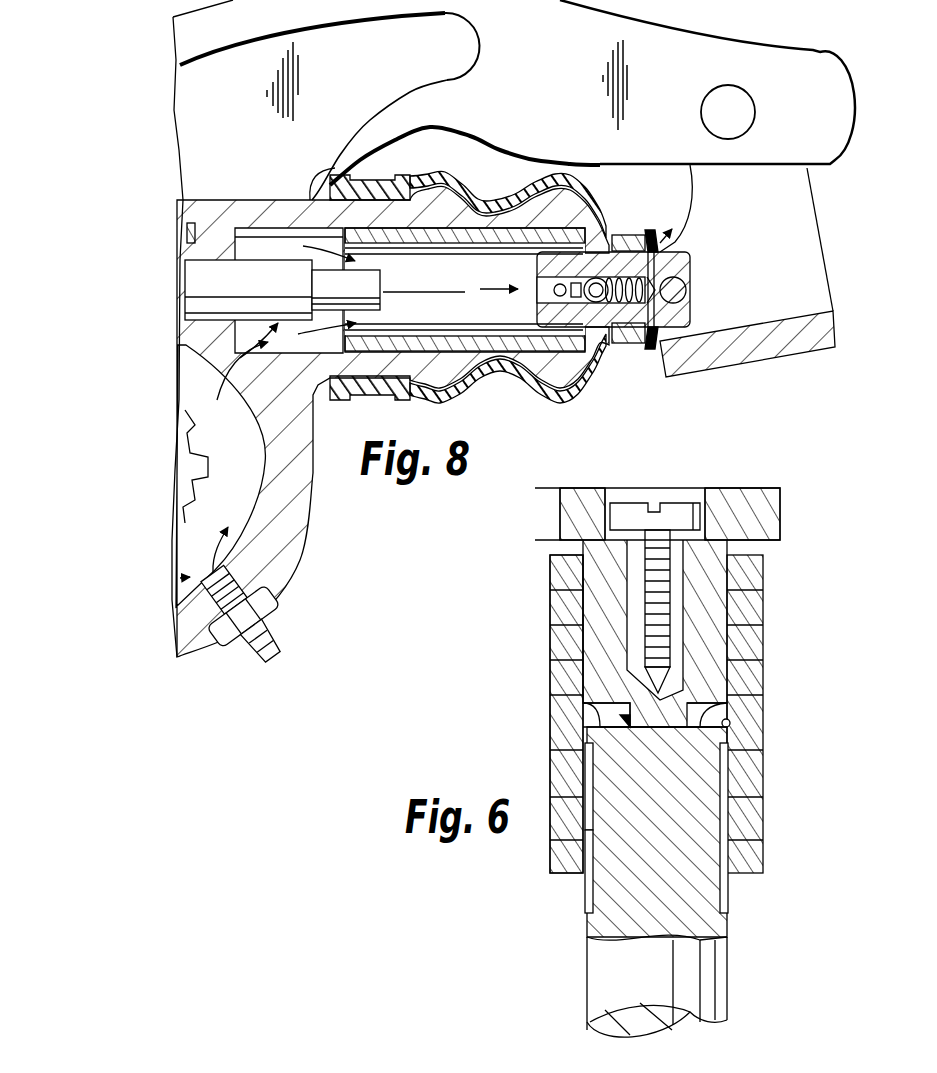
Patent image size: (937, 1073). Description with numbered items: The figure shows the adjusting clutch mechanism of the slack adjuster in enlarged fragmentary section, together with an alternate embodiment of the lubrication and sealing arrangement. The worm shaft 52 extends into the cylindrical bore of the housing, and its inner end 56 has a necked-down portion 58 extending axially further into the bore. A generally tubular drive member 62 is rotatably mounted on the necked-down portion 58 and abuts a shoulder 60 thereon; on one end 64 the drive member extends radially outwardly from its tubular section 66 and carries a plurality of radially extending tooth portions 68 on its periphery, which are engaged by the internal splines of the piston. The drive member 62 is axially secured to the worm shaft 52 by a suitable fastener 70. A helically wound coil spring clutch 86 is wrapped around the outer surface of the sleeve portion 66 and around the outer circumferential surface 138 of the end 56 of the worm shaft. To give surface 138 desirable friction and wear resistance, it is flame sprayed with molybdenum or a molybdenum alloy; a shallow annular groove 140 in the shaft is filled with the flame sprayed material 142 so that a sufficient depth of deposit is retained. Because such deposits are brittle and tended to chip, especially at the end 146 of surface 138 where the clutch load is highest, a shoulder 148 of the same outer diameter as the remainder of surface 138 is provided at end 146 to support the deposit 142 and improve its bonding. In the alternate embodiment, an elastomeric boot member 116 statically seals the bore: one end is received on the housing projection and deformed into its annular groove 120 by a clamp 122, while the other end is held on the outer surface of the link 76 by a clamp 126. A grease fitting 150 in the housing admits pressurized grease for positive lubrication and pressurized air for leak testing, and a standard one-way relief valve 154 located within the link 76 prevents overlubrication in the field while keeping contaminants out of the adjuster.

In FIG. 6, the worm shaft 52 is at (705, 931).
In FIG. 6, the inner end of the worm shaft 56 is at (700, 763).
In FIG. 6, the necked-down portion 58 is at (686, 634).
In FIG. 6, the shoulder 60 is at (723, 694).
In FIG. 6, the tubular drive member 62 is at (710, 633).
In FIG. 6, the end of the tubular drive member 64 is at (725, 526).
In FIG. 6, the tubular section 66 is at (710, 584).
In FIG. 6, the tooth portions 68 is at (781, 506).
In FIG. 6, the fastener 70 is at (641, 504).
In FIG. 8, the link 76 is at (681, 329).
In FIG. 6, the coil spring clutch 86 is at (534, 612).
In FIG. 8, the boot member 116 is at (473, 200).
In FIG. 8, the annular groove 120 is at (533, 273).
In FIG. 8, the clamp 122 is at (376, 175).
In FIG. 8, the clamp 126 is at (628, 345).
In FIG. 6, the outer circumferential surface 138 is at (592, 900).
In FIG. 6, the shallow annular groove 140 is at (586, 880).
In FIG. 6, the flame sprayed material 142 is at (728, 804).
In FIG. 6, the end of surface 146 is at (731, 722).
In FIG. 6, the shoulder 148 is at (596, 714).
In FIG. 8, the grease fitting 150 is at (282, 652).
In FIG. 8, the relief valve 154 is at (660, 252).